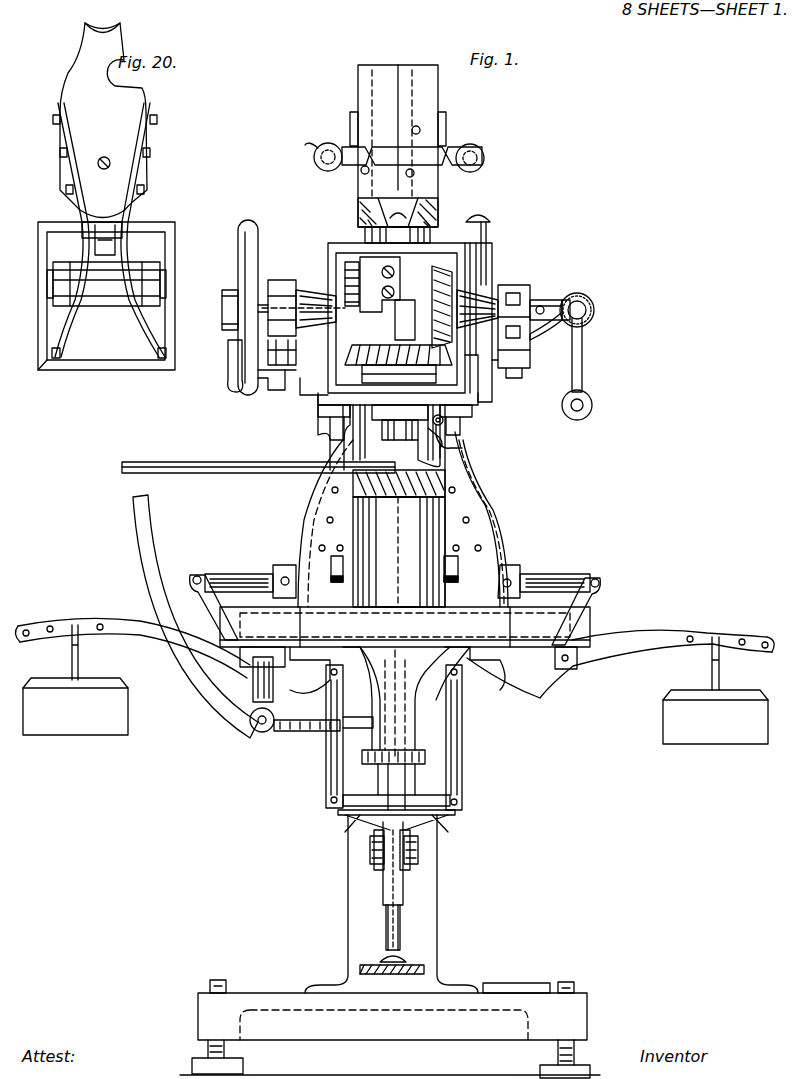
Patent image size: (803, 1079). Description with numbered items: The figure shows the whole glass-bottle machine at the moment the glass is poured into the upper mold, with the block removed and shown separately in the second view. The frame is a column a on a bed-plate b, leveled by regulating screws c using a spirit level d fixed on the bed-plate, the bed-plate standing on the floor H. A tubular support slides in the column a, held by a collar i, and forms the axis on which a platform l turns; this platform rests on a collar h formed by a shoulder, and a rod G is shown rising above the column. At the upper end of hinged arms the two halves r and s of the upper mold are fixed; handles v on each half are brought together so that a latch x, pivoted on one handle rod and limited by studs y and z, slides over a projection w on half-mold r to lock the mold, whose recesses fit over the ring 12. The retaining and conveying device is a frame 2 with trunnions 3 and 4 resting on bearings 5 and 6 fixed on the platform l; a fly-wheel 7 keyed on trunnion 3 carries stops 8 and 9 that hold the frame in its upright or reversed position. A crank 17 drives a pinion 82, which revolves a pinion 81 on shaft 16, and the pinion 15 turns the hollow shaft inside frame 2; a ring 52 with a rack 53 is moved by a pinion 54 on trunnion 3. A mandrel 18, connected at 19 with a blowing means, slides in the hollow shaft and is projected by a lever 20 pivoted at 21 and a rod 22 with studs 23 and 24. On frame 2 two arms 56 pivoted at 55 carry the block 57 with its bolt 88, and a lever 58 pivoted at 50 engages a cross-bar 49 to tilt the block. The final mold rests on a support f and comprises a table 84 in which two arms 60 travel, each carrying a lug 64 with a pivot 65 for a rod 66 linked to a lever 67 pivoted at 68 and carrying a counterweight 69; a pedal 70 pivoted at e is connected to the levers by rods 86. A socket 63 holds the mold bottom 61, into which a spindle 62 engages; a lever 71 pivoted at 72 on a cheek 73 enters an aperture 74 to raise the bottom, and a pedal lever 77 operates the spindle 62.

In FIG. 1, the vertical guide tube G is at (398, 135).
In FIG. 1, the upper mold half r is at (390, 92).
In FIG. 1, the upper mold half s is at (418, 96).
In FIG. 1, the stud y is at (420, 128).
In FIG. 1, the handle v is at (318, 160).
In FIG. 1, the latch x is at (412, 155).
In FIG. 1, the projection w is at (362, 173).
In FIG. 1, the stud z is at (414, 175).
In FIG. 1, the mandrel 18 is at (358, 214).
In FIG. 1, the ring 12 is at (440, 212).
In FIG. 1, the stud 23 is at (492, 222).
In FIG. 1, the rod 22 is at (488, 240).
In FIG. 20, the frame 2 is at (112, 360).
In FIG. 1, the frame 2 is at (328, 247).
In FIG. 1, the fly-wheel 7 is at (238, 252).
In FIG. 1, the bearing 5 is at (282, 280).
In FIG. 1, the rack 53 is at (345, 270).
In FIG. 1, the ring 52 is at (380, 284).
In FIG. 1, the trunnion 3 is at (332, 306).
In FIG. 1, the pinion 15 is at (452, 275).
In FIG. 1, the bearing 6 is at (520, 288).
In FIG. 1, the shaft 16 is at (540, 300).
In FIG. 1, the pinion 81 is at (568, 300).
In FIG. 1, the pinion 82 is at (594, 305).
In FIG. 1, the stop 8 is at (228, 356).
In FIG. 1, the stop 9 is at (272, 385).
In FIG. 1, the platform l is at (312, 386).
In FIG. 1, the trunnion 4 is at (485, 316).
In FIG. 1, the pinion 54 is at (345, 348).
In FIG. 1, the crank 17 is at (561, 377).
In FIG. 20, the pivot 55 is at (50, 362).
In FIG. 1, the pivot 55 is at (318, 398).
In FIG. 1, the pivot 21 is at (472, 410).
In FIG. 1, the stud 24 is at (462, 432).
In FIG. 1, the lever 20 is at (465, 450).
In FIG. 1, the blowing connection 19 is at (441, 466).
In FIG. 1, the collar h is at (340, 448).
In FIG. 1, the collar i is at (399, 451).
In FIG. 1, the column a is at (403, 506).
In FIG. 1, the arm 60 is at (470, 578).
In FIG. 1, the block 64 is at (283, 565).
In FIG. 1, the pivot 65 is at (258, 574).
In FIG. 1, the rod 66 is at (200, 565).
In FIG. 1, the table 84 is at (405, 627).
In FIG. 1, the lever 67 is at (130, 626).
In FIG. 1, the pivot 68 is at (255, 662).
In FIG. 1, the counterweight 69 is at (395, 684).
In FIG. 1, the lever 71 is at (148, 537).
In FIG. 1, the pivot 72 is at (258, 730).
In FIG. 1, the cheek 73 is at (270, 692).
In FIG. 1, the support f is at (398, 678).
In FIG. 1, the aperture 74 is at (365, 738).
In FIG. 1, the rod 86 is at (330, 775).
In FIG. 1, the mold bottom 61 is at (436, 690).
In FIG. 1, the socket 63 is at (420, 735).
In FIG. 1, the pedal 70 is at (450, 800).
In FIG. 1, the pivot e is at (370, 852).
In FIG. 1, the spindle 62 is at (405, 900).
In FIG. 1, the lever 77 is at (424, 968).
In FIG. 1, the bed-plate b is at (392, 927).
In FIG. 1, the floor H is at (390, 1059).
In FIG. 1, the regulating screw c is at (226, 982).
In FIG. 1, the spirit level d is at (495, 988).
In FIG. 20, the block 57 is at (103, 120).
In FIG. 20, the screw 88 is at (98, 166).
In FIG. 20, the arm 56 is at (140, 218).
In FIG. 20, the pivot 50 is at (80, 226).
In FIG. 20, the lever 58 is at (95, 246).
In FIG. 20, the cross-bar 49 is at (120, 240).